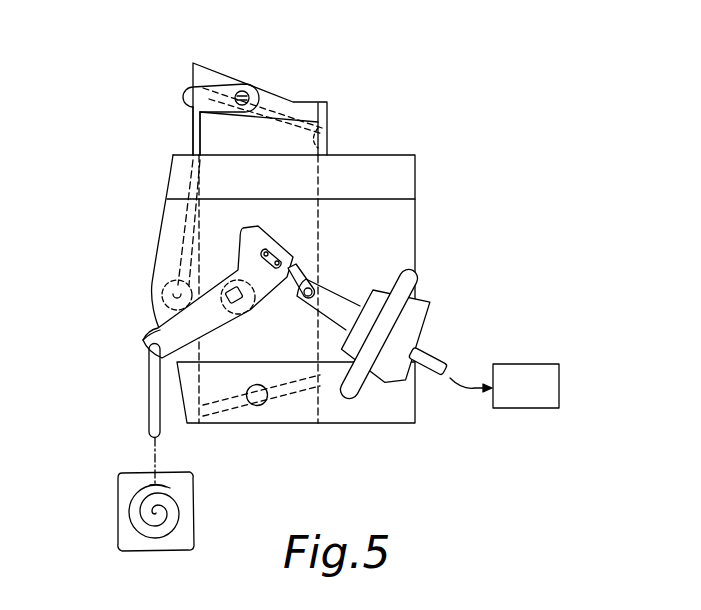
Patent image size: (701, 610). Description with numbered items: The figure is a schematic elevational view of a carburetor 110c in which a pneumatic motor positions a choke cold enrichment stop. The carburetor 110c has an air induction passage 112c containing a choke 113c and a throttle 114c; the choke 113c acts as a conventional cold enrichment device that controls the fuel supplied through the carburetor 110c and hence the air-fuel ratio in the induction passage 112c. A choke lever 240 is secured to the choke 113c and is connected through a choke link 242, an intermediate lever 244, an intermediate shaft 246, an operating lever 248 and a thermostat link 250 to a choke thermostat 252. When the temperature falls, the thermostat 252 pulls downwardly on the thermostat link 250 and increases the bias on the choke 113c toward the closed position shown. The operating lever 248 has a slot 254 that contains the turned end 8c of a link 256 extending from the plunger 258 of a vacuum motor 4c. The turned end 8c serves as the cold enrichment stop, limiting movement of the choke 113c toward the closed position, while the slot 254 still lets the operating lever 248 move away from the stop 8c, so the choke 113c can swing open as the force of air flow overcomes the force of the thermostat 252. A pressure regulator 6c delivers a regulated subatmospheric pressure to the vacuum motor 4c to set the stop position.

The vacuum motor 4c is at (417, 268).
The pressure regulator 6c is at (512, 364).
The turned end of link (cold enrichment stop) 8c is at (280, 261).
The carburetor 110c is at (343, 152).
The air induction passage 112c is at (323, 130).
The choke 113c is at (273, 108).
The throttle 114c is at (295, 387).
The choke lever 240 is at (218, 100).
The choke link 242 is at (190, 143).
The intermediate lever 244 is at (165, 290).
The intermediate shaft 246 is at (240, 300).
The operating lever 248 is at (150, 333).
The thermostat link 250 is at (157, 417).
The choke thermostat 252 is at (182, 502).
The slot 254 is at (272, 248).
The link 256 is at (306, 276).
The plunger 258 is at (329, 292).